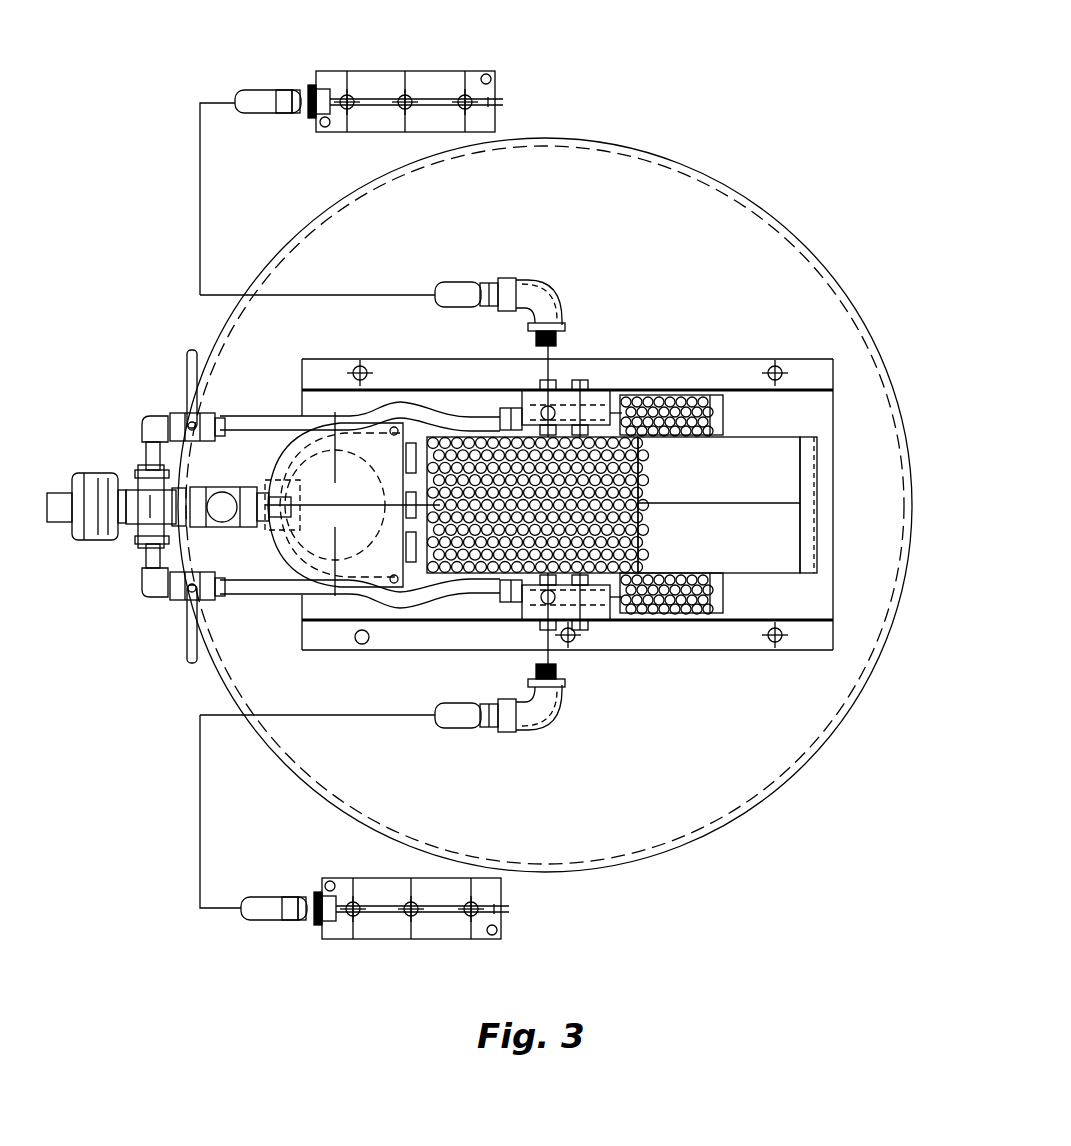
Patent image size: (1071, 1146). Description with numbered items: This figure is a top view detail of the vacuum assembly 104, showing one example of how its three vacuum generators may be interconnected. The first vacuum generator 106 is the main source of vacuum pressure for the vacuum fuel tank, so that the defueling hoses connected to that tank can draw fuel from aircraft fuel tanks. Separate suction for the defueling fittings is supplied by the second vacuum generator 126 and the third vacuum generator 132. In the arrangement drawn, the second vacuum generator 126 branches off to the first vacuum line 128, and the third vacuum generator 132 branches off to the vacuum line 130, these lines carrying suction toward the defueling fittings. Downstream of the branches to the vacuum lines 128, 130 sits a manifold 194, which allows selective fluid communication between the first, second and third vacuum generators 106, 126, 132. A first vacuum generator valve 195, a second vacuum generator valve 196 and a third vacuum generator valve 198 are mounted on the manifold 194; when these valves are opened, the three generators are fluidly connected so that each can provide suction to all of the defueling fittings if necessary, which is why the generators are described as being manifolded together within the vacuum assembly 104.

The vacuum assembly 104 is at (778, 153).
The first vacuum generator 106 is at (820, 475).
The second vacuum generator 126 is at (672, 395).
The first vacuum line 128 is at (465, 287).
The third vacuum line 130 is at (470, 718).
The third vacuum generator 132 is at (673, 613).
The manifold 194 is at (95, 421).
The first vacuum generator valve 195 is at (232, 490).
The second vacuum generator valve 196 is at (175, 412).
The third vacuum generator valve 198 is at (180, 602).